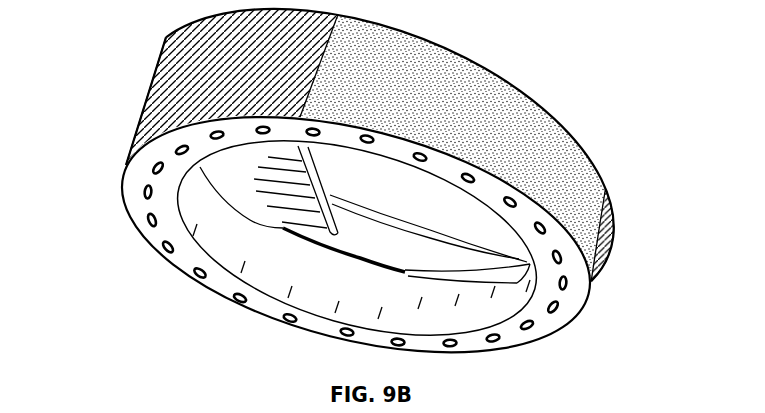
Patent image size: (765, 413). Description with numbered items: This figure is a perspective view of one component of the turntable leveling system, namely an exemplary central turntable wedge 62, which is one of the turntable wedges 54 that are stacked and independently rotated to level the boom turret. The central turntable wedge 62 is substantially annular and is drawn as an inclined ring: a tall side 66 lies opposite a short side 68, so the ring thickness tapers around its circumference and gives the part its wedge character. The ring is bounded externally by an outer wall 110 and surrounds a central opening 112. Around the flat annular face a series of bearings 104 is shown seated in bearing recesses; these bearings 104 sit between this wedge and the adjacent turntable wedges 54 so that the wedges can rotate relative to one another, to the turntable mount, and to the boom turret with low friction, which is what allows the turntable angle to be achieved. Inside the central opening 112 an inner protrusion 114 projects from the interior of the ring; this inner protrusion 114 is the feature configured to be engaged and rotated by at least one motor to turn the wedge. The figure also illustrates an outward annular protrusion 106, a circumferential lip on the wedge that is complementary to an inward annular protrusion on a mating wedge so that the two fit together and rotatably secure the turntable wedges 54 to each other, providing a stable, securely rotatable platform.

The turntable wedge 54 is at (601, 101).
The central turntable wedge 62 is at (172, 40).
The tall side 66 is at (106, 92).
The short side 68 is at (633, 251).
The bearings 104 is at (165, 255).
The outward annular protrusion 106 is at (410, 230).
The outer wall 110 is at (487, 100).
The central opening 112 is at (406, 152).
The inner protrusion 114 is at (305, 187).